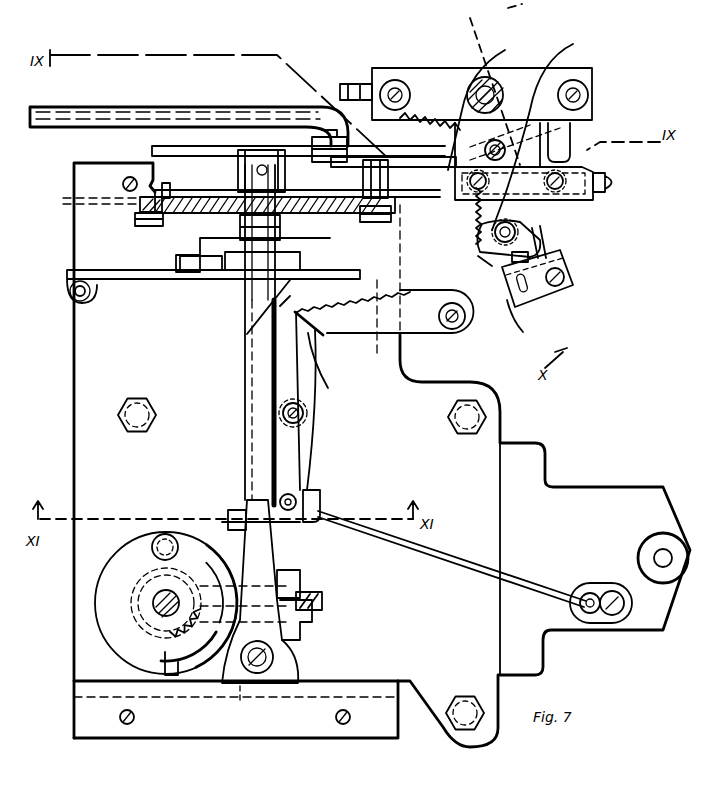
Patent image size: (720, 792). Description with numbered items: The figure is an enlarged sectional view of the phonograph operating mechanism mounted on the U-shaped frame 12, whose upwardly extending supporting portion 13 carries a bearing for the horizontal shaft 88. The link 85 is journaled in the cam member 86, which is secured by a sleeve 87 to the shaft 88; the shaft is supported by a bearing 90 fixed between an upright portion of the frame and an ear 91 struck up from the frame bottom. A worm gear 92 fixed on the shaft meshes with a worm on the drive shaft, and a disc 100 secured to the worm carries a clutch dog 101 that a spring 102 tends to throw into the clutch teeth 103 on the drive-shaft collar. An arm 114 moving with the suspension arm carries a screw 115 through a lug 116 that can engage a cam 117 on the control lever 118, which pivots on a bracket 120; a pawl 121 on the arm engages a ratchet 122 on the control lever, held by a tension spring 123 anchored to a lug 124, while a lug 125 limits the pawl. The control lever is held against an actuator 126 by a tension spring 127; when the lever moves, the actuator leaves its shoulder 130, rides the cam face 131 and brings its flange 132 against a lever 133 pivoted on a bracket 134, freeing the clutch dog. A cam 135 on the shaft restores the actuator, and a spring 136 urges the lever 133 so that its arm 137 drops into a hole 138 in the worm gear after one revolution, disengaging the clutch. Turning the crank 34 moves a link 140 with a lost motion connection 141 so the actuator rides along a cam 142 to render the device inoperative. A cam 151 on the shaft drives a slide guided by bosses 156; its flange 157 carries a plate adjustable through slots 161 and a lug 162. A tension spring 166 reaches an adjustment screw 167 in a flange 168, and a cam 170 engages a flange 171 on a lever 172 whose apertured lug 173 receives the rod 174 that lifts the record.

The frame 12 is at (483, 447).
The upwardly extending supporting portion 13 is at (398, 705).
The crank 34 is at (600, 620).
The link 85 is at (62, 115).
The cam member 86 is at (195, 146).
The sleeve 87 is at (242, 150).
The horizontal shaft 88 is at (250, 410).
The bearing 90 is at (281, 229).
The ear 91 is at (200, 240).
The worm gear 92 is at (323, 601).
The disc 100 is at (128, 565).
The clutch dog 101 is at (205, 545).
The spring 102 is at (172, 648).
The clutch teeth 103 is at (140, 610).
The arm 114 is at (547, 133).
The screw 115 is at (546, 252).
The lug 116 is at (512, 258).
The cam 117 is at (578, 290).
The control lever 118 is at (523, 330).
The bracket 120 is at (480, 334).
The pawl 121 is at (522, 233).
The ratchet 122 is at (565, 262).
The tension spring 123 is at (475, 216).
The lug 124 is at (455, 160).
The lug 125 is at (482, 252).
The actuator 126 is at (310, 444).
The tension spring 127 is at (378, 356).
The shoulder 130 is at (322, 334).
The cam face 131 is at (328, 390).
The flange 132 is at (322, 510).
The lever 133 is at (272, 561).
The bracket 134 is at (274, 663).
The cam 135 is at (232, 514).
The spring 136 is at (240, 690).
The arm 137 is at (302, 581).
The hole 138 is at (300, 624).
The link 140 is at (426, 545).
The lost motion connection 141 is at (297, 500).
The cam 142 is at (256, 330).
The cam 151 is at (318, 158).
The bosses 156 is at (170, 200).
The flange 157 is at (582, 172).
The slots 161 is at (575, 158).
The lug 162 is at (612, 180).
The tension spring 166 is at (484, 103).
The adjustment screw 167 is at (358, 84).
The flange 168 is at (380, 68).
The cam 170 is at (192, 272).
The flange 171 is at (218, 272).
The lever 172 is at (135, 282).
The apertured lug 173 is at (76, 301).
The rod 174 is at (73, 293).